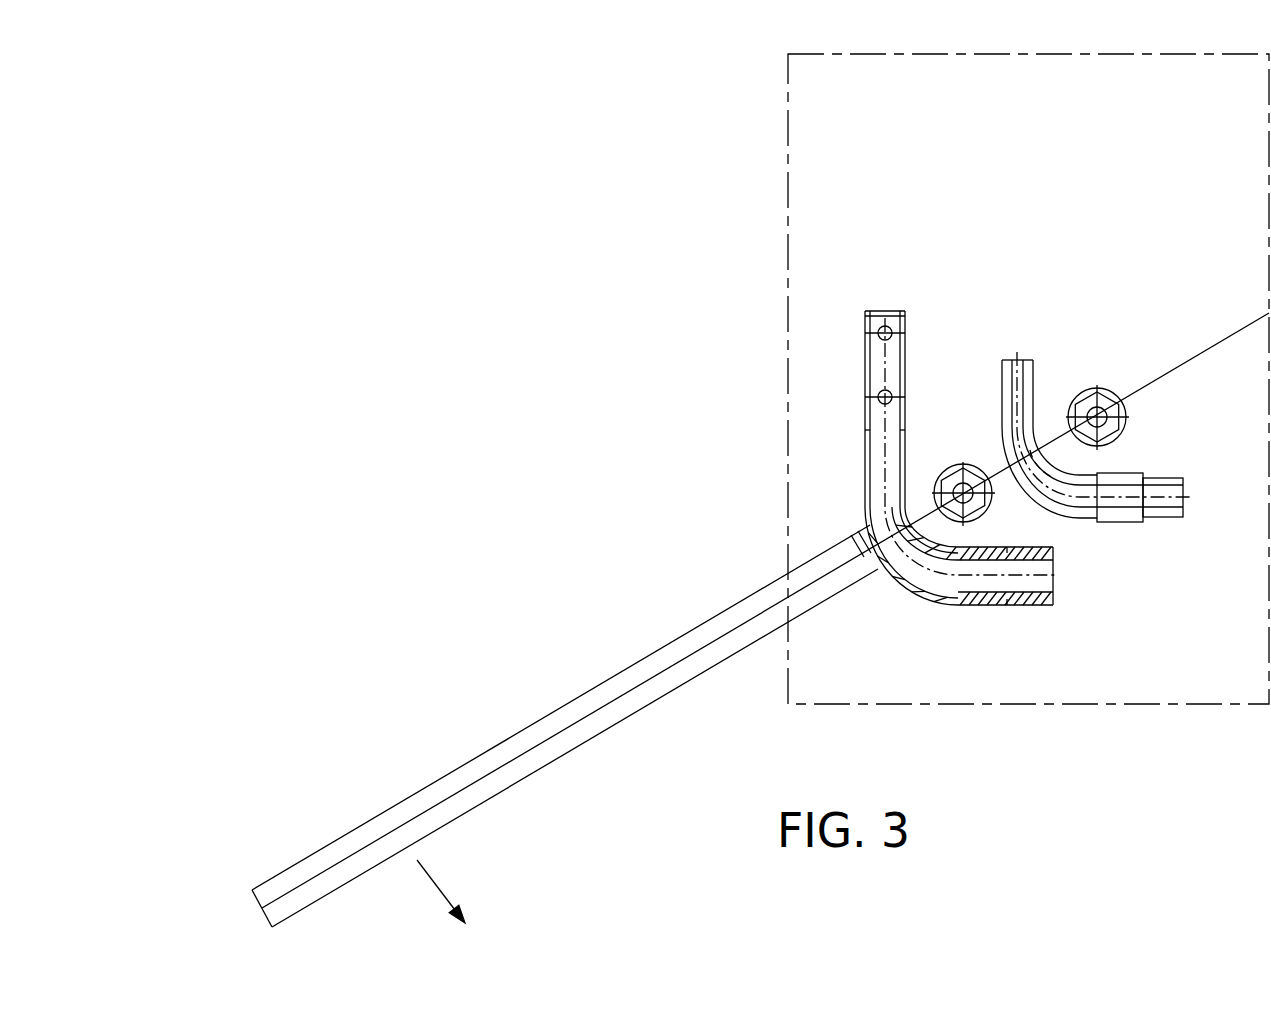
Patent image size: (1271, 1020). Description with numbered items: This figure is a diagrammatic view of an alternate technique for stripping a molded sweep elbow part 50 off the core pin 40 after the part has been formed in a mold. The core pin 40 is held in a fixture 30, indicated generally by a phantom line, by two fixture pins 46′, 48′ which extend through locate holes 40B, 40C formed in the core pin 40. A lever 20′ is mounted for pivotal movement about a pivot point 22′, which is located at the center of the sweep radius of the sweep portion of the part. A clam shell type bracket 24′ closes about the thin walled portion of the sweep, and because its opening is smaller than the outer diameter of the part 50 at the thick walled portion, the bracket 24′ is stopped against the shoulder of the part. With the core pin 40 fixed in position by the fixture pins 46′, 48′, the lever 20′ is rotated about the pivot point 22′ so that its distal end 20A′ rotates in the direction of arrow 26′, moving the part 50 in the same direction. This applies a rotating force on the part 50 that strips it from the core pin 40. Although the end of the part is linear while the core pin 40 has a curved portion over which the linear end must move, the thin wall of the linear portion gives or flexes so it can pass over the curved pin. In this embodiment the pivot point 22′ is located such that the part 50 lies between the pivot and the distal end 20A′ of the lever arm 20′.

The lever 20′ is at (440, 780).
The end of lever 20A′ is at (253, 888).
The pivot point 22′ is at (957, 466).
The clam shell type bracket 24′ is at (863, 532).
The arrow 26′ is at (430, 887).
The fixture 30 is at (788, 195).
The core pin 40 is at (888, 428).
The locate hole 40B is at (905, 312).
The locate hole 40C is at (893, 391).
The fixture pin 46′ is at (877, 330).
The fixture pin 48′ is at (877, 397).
The part 50 is at (916, 617).